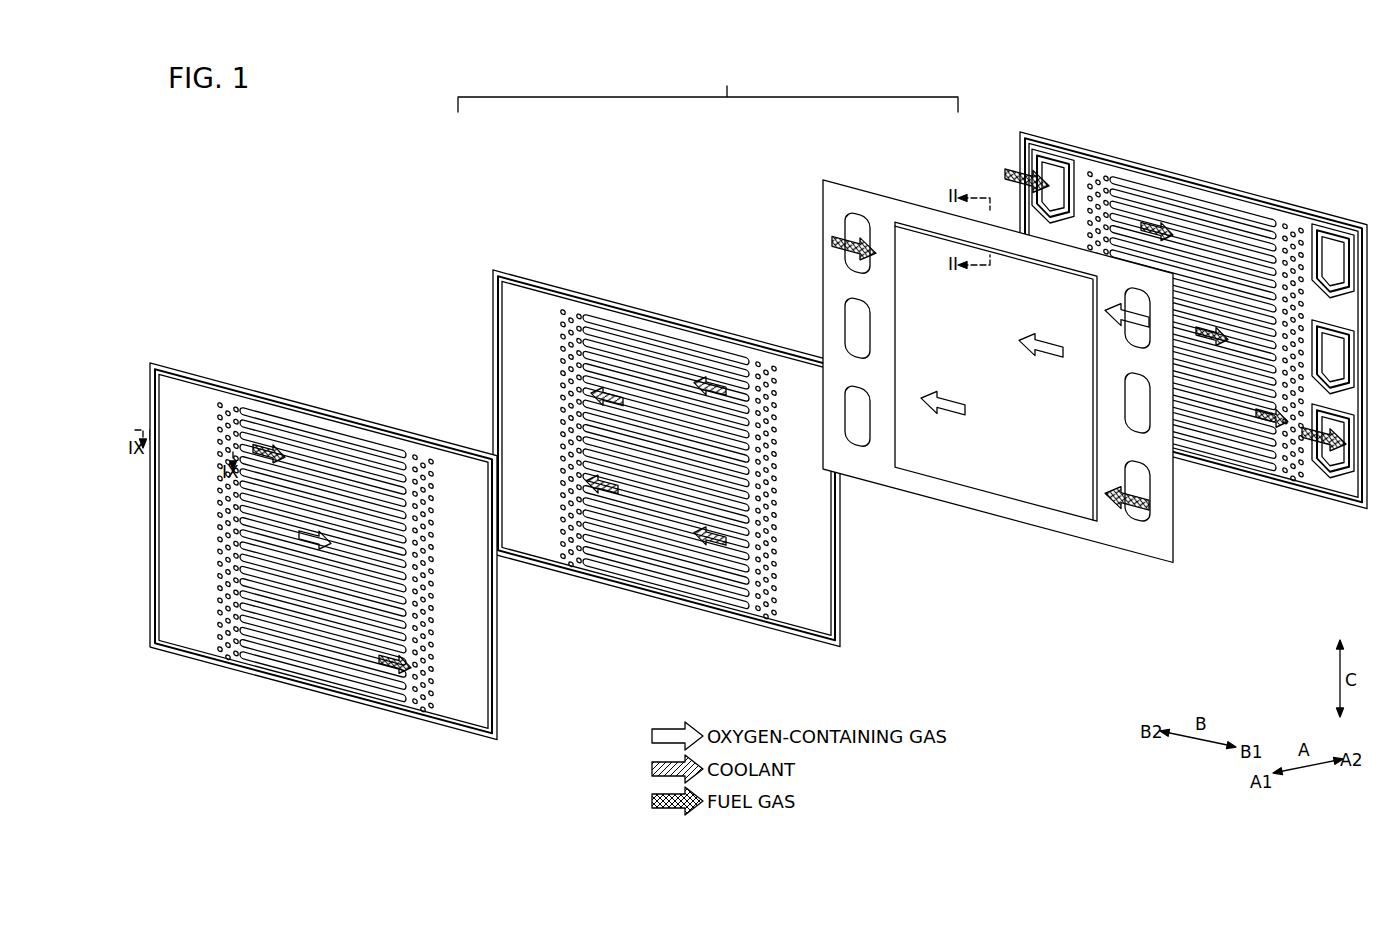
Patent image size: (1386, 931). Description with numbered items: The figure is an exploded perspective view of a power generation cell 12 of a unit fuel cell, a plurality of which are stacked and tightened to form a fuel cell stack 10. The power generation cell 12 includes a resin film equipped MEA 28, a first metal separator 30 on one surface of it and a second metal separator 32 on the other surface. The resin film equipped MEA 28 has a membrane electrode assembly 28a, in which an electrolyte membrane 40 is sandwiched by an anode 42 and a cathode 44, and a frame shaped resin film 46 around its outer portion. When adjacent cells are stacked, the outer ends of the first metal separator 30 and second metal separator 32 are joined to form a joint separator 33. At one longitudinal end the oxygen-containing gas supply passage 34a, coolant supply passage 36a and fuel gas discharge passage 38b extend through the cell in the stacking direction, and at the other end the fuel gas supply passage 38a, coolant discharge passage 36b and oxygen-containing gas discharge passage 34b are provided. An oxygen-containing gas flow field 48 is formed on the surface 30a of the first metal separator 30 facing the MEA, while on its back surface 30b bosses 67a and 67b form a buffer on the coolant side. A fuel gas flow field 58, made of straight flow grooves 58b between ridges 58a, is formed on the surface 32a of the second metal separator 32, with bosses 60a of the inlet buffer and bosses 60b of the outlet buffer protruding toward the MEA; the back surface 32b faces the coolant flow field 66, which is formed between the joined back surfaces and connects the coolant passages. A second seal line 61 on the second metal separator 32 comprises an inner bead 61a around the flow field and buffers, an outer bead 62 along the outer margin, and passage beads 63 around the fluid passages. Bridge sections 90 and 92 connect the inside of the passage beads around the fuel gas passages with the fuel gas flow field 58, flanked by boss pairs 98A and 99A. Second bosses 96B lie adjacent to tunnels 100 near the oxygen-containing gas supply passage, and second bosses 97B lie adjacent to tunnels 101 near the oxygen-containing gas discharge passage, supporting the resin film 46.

The fuel cell stack 10 is at (350, 84).
The power generation cell 12 is at (708, 94).
The resin film equipped MEA 28 is at (821, 174).
The membrane electrode assembly 28a is at (1068, 515).
The first metal separator 30 is at (490, 262).
The surface of first metal separator 30a is at (822, 650).
The surface of first metal separator 30b is at (800, 626).
The second metal separator 32 is at (1015, 130).
The surface of second metal separator 32a is at (1347, 486).
The surface of second metal separator 32b is at (1368, 508).
The joint separator 33 is at (1016, 120).
The oxygen-containing gas supply passage 34a is at (1345, 225).
The oxygen-containing gas discharge passage 34b is at (820, 490).
The coolant supply passage 36a is at (1140, 410).
The coolant discharge passage 36b is at (850, 320).
The fuel gas supply passage 38a is at (1045, 160).
The fuel gas discharge passage 38b is at (1320, 462).
The electrolyte membrane 40 is at (1040, 500).
The anode 42 is at (935, 232).
The cathode 44 is at (920, 240).
The resin film 46 is at (871, 200).
The oxygen-containing gas flow field 48 is at (636, 352).
The fuel gas flow field 58 is at (293, 438).
The ridges 58a is at (323, 551).
The straight flow grooves 58b is at (1214, 323).
The bosses 60a is at (1092, 226).
The bosses 60b is at (1282, 446).
The second seal line 61 is at (1232, 476).
The inner bead 61a is at (1188, 445).
The outer bead 62 is at (1196, 450).
The passage beads 63 is at (1045, 150).
The coolant flow field 66 is at (604, 352).
The bosses 67a is at (768, 600).
The bosses 67b is at (572, 548).
The bridge section 90 is at (1052, 180).
The bridge section 92 is at (1306, 448).
The second bosses 96B is at (1298, 228).
The second bosses 97B is at (210, 640).
The boss pairs 98A is at (1082, 180).
The boss pairs 99A is at (1312, 458).
The tunnels 100 is at (1320, 228).
The tunnels 101 is at (250, 600).